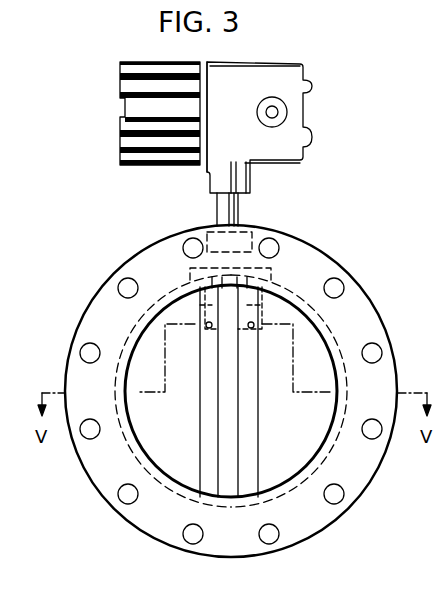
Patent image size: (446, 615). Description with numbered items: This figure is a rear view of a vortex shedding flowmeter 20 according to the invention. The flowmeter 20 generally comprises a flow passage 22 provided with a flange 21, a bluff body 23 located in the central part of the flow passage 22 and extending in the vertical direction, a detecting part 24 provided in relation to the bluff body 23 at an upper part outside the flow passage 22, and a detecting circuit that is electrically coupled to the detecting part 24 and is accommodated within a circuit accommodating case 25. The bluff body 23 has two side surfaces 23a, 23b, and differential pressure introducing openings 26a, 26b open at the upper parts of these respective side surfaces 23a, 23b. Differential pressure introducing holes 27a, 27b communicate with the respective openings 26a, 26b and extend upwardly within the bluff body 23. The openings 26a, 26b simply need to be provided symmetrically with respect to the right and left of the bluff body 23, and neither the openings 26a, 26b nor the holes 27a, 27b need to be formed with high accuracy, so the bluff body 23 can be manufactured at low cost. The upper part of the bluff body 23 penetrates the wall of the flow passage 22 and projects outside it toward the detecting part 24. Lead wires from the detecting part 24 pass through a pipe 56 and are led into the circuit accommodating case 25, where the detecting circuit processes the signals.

The vortex shedding flowmeter 20 is at (367, 178).
The flange 21 is at (335, 512).
The flow passage 22 is at (318, 348).
The bluff body 23 is at (208, 478).
The side surface of bluff body 23a is at (250, 432).
The side surface of bluff body 23b is at (206, 433).
The detecting part 24 is at (273, 272).
The circuit accommodating case 25 is at (277, 67).
The differential pressure introducing opening 26a is at (253, 328).
The differential pressure introducing opening 26b is at (207, 328).
The differential pressure introducing hole 27a is at (296, 287).
The differential pressure introducing hole 27b is at (168, 284).
The pipe 56 is at (240, 212).